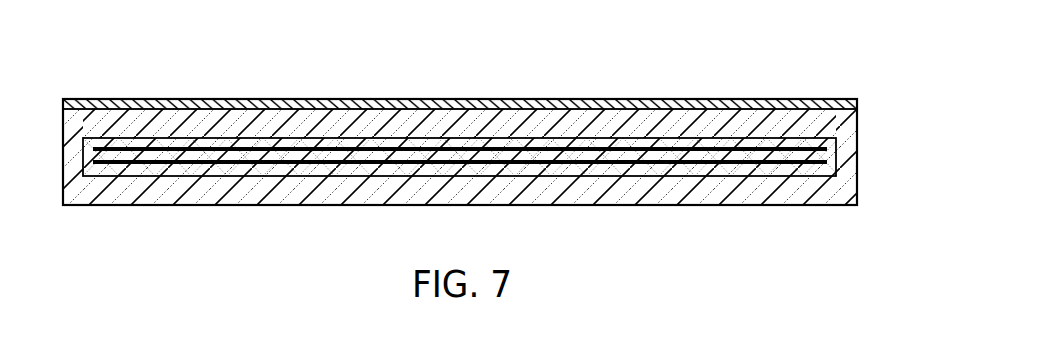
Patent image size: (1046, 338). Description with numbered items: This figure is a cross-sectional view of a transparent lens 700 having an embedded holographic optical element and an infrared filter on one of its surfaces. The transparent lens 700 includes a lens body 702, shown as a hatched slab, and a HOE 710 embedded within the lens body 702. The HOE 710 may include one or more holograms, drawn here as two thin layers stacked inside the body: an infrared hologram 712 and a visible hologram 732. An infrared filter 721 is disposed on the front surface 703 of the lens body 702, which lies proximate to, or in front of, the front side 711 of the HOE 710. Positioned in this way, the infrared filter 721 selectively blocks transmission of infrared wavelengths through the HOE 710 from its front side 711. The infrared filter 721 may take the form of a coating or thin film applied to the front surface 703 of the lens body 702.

The transparent lens 700 is at (858, 149).
The front surface 703 is at (168, 107).
The lens body 702 is at (255, 118).
The front side 711 is at (317, 138).
The HOE 710 is at (460, 81).
The infrared filter 721 is at (603, 107).
The infrared hologram 712 is at (685, 148).
The visible hologram 732 is at (773, 161).